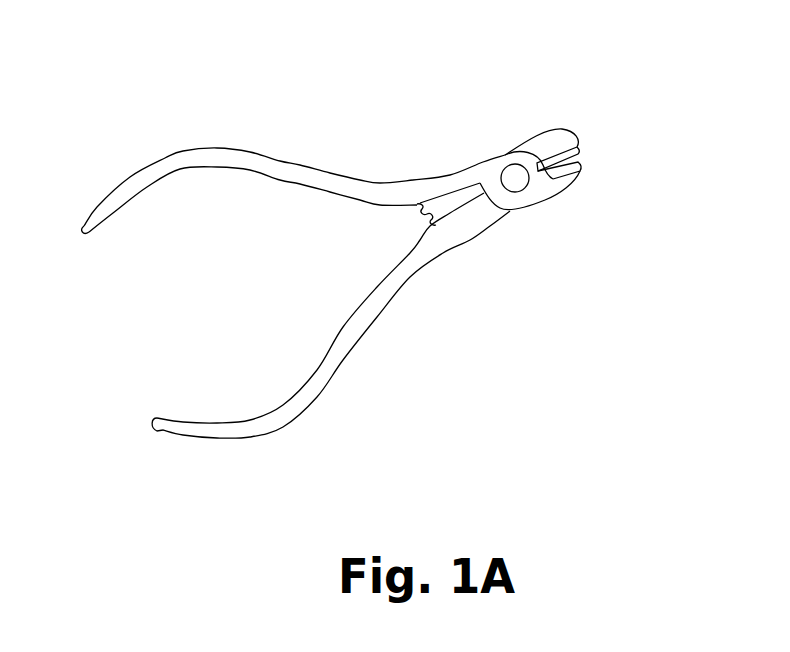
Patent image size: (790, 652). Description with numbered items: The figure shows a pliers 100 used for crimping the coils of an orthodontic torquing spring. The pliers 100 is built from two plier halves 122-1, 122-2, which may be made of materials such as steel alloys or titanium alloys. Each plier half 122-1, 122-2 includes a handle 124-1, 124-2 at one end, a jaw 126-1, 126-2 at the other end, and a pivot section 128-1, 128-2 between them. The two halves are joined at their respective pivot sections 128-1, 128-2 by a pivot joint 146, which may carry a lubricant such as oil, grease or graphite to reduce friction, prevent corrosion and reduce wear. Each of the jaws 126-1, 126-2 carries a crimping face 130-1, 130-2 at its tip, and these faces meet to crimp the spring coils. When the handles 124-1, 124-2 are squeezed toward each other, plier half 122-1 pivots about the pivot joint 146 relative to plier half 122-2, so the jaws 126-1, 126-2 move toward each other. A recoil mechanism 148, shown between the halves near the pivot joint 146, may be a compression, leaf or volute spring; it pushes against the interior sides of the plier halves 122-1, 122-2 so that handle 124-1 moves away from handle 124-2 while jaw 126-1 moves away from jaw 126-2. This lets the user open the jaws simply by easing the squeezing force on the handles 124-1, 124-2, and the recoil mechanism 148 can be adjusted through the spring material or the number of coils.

The pliers 100 is at (362, 101).
The plier half 122-1 is at (311, 363).
The plier half 122-2 is at (263, 204).
The handle 124-1 is at (167, 427).
The handle 124-2 is at (90, 232).
The jaw 126-1 is at (596, 106).
The jaw 126-2 is at (622, 217).
The pivot section 128-1 is at (530, 232).
The pivot section 128-2 is at (492, 137).
The crimping face 130-1 is at (577, 149).
The crimping face 130-2 is at (578, 157).
The pivot joint 146 is at (513, 176).
The recoil mechanism 148 is at (417, 208).